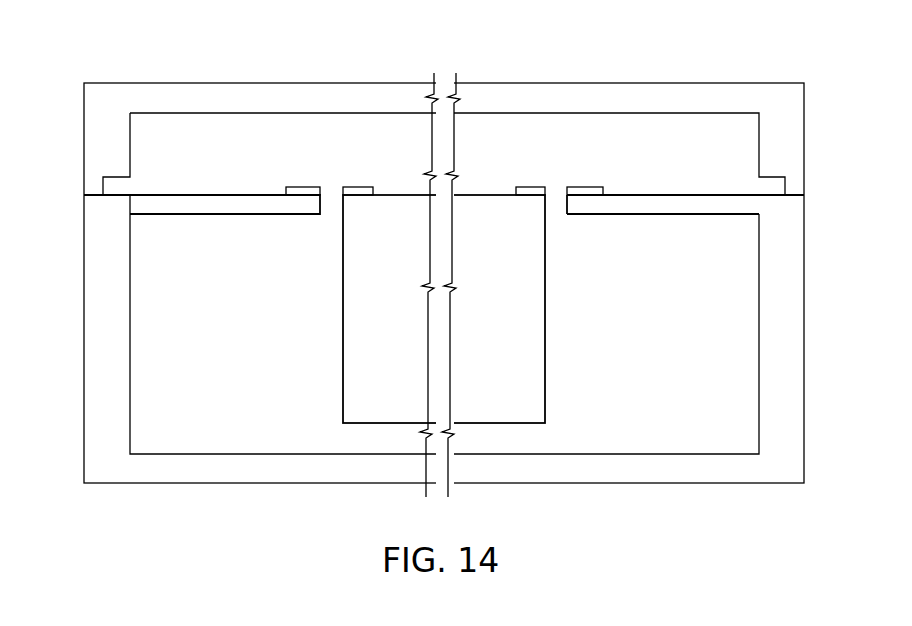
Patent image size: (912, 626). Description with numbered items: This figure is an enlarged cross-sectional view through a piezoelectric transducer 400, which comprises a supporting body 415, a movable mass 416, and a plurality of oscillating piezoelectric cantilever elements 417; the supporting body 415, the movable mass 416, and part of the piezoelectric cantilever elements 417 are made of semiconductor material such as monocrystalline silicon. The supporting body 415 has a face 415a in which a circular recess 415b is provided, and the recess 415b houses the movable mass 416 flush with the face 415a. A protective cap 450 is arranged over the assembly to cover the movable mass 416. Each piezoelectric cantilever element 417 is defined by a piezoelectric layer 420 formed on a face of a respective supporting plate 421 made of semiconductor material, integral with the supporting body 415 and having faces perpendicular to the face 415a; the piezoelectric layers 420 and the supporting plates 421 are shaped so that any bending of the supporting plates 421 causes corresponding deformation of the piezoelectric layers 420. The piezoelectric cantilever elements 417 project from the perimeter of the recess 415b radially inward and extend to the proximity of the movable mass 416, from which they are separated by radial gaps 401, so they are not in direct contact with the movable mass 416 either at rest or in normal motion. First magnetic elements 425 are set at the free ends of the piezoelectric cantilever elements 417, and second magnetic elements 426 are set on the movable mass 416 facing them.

The piezoelectric transducer 400 is at (722, 67).
The radial gaps 401 is at (557, 207).
The supporting body 415 is at (190, 470).
The face 415a is at (93, 190).
The circular recess 415b is at (628, 437).
The movable mass 416 is at (372, 332).
The piezoelectric cantilever elements 417 is at (202, 250).
The piezoelectric layers 420 is at (185, 207).
The supporting plates 421 is at (659, 207).
The first magnetic elements 425 is at (302, 193).
The second magnetic elements 426 is at (363, 192).
The protective cap 450 is at (645, 82).